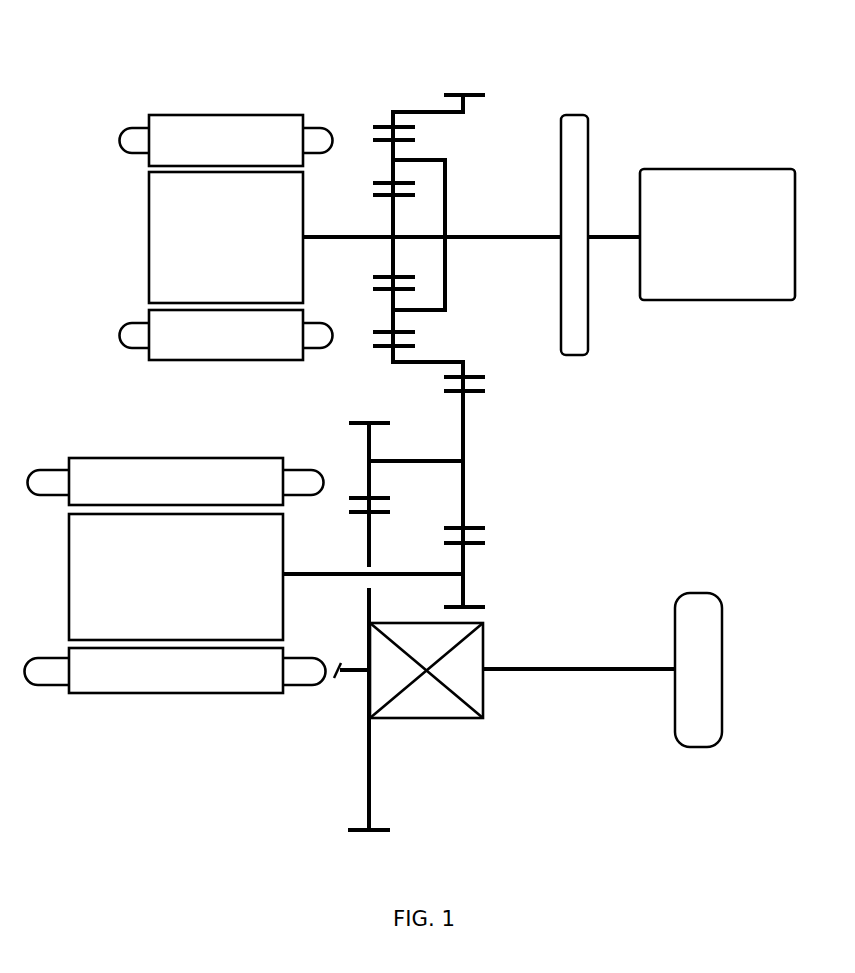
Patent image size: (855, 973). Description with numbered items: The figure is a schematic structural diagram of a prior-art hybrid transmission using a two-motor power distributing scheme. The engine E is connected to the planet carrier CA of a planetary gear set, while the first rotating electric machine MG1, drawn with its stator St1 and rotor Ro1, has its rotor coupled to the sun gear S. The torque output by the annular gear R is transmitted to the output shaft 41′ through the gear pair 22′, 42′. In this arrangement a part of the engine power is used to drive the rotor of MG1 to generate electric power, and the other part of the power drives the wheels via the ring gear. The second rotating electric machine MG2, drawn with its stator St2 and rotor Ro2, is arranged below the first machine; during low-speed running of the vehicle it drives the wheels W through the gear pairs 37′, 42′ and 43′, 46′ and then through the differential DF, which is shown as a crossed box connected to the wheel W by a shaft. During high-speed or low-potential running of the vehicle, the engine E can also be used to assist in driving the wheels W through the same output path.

The first rotating electric machine MG1 is at (240, 184).
The stator of first motor generator St1 is at (225, 237).
The rotor of first motor generator Ro1 is at (271, 237).
The sun gear S is at (385, 200).
The annular gear R is at (404, 126).
The planet carrier CA is at (445, 193).
The gear 22′ is at (475, 92).
The engine E is at (705, 168).
The second rotating electric machine MG2 is at (244, 526).
The stator of second motor generator St2 is at (175, 575).
The rotor of second motor generator Ro2 is at (266, 577).
The gear 43′ is at (369, 445).
The output shaft 41′ is at (410, 461).
The gear 42′ is at (463, 480).
The gear 46′ is at (369, 538).
The gear 37′ is at (463, 556).
The wheels W is at (692, 596).
The differential DF is at (432, 720).